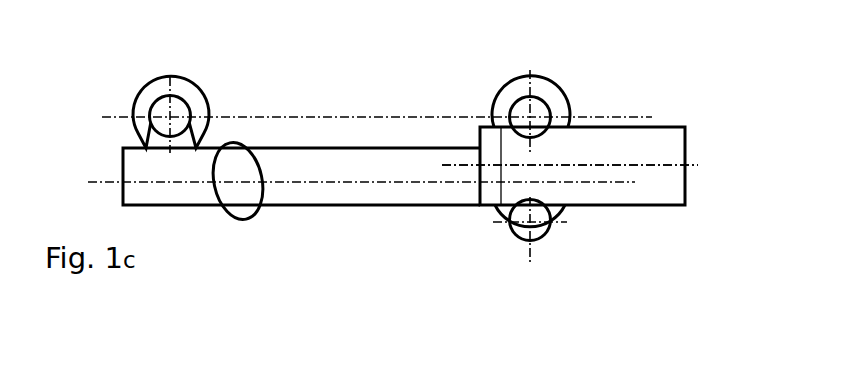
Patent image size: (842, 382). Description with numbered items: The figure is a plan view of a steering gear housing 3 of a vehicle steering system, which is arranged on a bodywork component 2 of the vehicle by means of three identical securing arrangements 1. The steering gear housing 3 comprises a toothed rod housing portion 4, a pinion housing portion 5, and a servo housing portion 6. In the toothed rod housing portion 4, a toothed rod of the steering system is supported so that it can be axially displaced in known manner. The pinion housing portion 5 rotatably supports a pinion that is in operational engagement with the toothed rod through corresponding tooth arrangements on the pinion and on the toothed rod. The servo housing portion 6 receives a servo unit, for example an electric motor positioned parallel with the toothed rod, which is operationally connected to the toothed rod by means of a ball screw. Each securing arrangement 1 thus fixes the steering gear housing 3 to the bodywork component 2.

The securing arrangement 1 is at (117, 94).
The bodywork component 2 is at (198, 88).
The steering gear housing 3 is at (716, 144).
The toothed rod housing portion 4 is at (377, 200).
The pinion housing portion 5 is at (240, 198).
The servo housing portion 6 is at (668, 185).